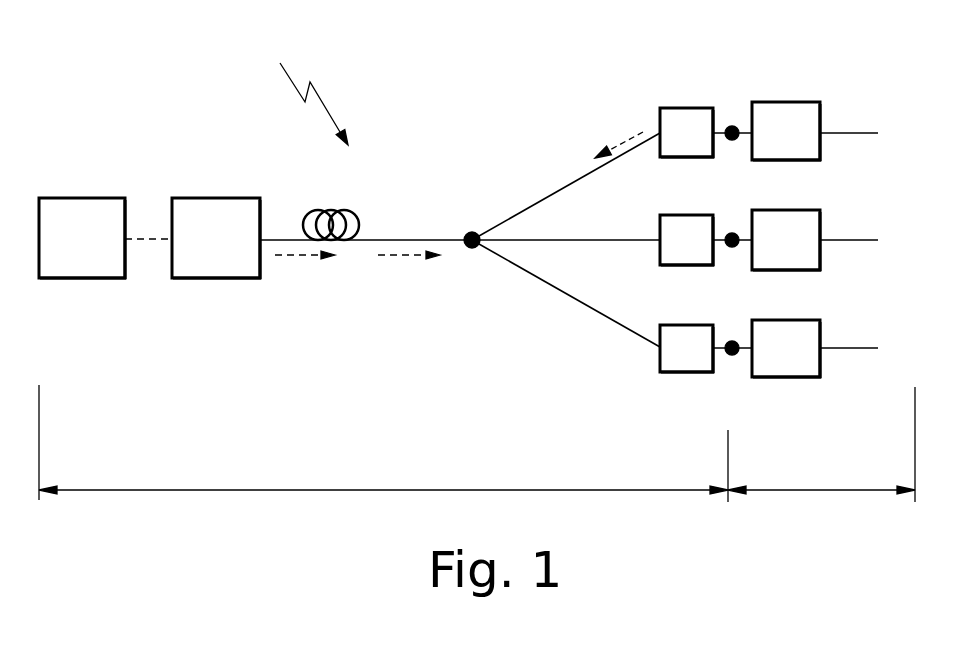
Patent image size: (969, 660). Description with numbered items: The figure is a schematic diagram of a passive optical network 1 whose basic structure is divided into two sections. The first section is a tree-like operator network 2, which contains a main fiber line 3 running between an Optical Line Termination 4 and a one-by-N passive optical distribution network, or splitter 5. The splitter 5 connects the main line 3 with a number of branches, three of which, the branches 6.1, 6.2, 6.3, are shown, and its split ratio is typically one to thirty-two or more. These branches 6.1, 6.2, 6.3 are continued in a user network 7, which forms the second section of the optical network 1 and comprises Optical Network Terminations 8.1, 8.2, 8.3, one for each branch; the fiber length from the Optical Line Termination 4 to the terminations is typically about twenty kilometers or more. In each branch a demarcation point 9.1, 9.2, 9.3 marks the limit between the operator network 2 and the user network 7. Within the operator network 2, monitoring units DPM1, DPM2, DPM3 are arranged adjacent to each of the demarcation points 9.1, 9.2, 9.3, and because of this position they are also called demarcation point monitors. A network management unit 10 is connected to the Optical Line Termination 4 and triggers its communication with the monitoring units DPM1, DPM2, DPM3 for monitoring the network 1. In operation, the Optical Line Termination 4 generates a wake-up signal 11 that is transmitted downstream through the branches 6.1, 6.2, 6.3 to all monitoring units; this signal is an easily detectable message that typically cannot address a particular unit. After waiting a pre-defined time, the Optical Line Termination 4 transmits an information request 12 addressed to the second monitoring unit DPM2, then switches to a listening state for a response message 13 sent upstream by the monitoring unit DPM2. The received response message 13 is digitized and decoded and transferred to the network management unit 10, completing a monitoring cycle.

The passive optical network 1 is at (307, 94).
The operator network 2 is at (340, 491).
The main fiber line 3 is at (285, 238).
The Optical Line Termination 4 is at (219, 212).
The passive optical distribution network 5 is at (472, 231).
The branch 6.1 is at (558, 191).
The branch 6.2 is at (516, 242).
The branch 6.3 is at (556, 291).
The user network 7 is at (807, 491).
The Optical Network Termination 8.1 is at (790, 118).
The Optical Network Termination 8.2 is at (790, 228).
The Optical Network Termination 8.3 is at (790, 367).
The demarcation point 9.1 is at (732, 125).
The demarcation point 9.2 is at (732, 232).
The demarcation point 9.3 is at (732, 356).
The network management unit 10 is at (85, 212).
The wake-up signal 11 is at (402, 256).
The information request 12 is at (296, 256).
The response message 13 is at (622, 143).
The monitoring unit DPM1 is at (678, 118).
The monitoring unit DPM2 is at (678, 247).
The monitoring unit DPM3 is at (678, 367).